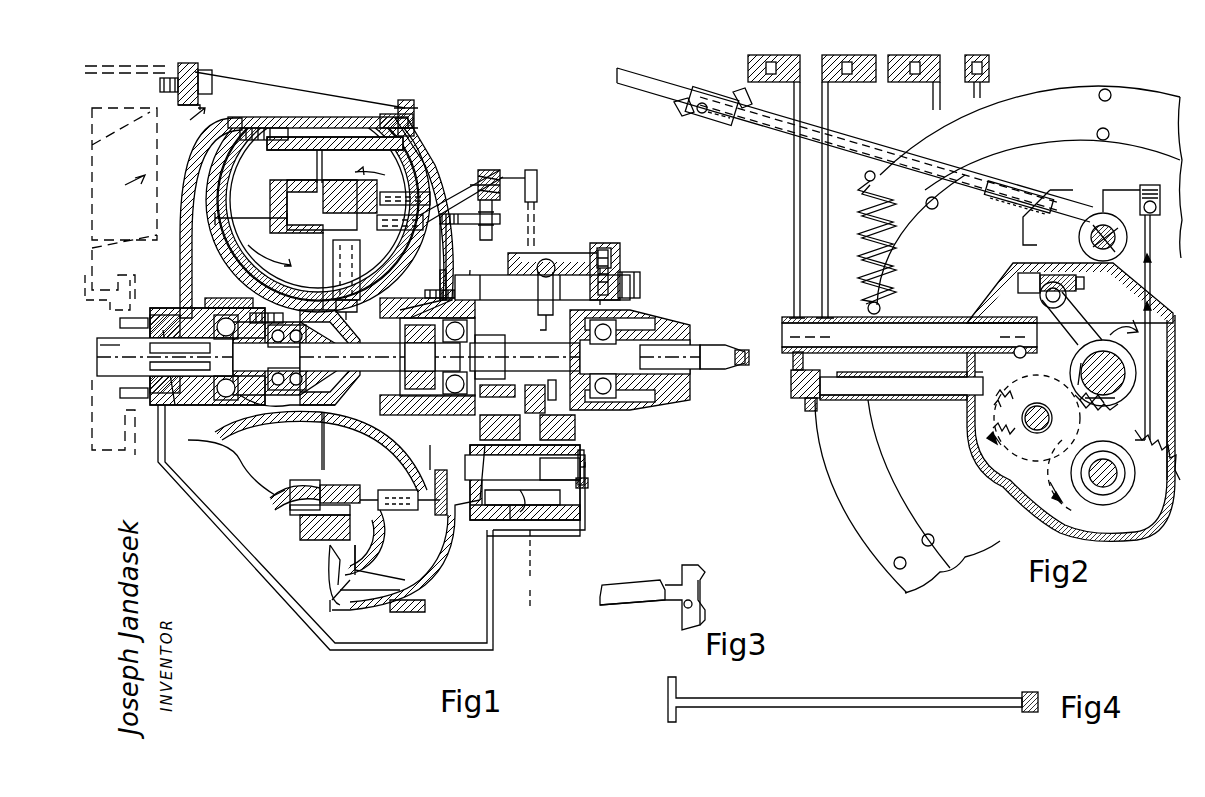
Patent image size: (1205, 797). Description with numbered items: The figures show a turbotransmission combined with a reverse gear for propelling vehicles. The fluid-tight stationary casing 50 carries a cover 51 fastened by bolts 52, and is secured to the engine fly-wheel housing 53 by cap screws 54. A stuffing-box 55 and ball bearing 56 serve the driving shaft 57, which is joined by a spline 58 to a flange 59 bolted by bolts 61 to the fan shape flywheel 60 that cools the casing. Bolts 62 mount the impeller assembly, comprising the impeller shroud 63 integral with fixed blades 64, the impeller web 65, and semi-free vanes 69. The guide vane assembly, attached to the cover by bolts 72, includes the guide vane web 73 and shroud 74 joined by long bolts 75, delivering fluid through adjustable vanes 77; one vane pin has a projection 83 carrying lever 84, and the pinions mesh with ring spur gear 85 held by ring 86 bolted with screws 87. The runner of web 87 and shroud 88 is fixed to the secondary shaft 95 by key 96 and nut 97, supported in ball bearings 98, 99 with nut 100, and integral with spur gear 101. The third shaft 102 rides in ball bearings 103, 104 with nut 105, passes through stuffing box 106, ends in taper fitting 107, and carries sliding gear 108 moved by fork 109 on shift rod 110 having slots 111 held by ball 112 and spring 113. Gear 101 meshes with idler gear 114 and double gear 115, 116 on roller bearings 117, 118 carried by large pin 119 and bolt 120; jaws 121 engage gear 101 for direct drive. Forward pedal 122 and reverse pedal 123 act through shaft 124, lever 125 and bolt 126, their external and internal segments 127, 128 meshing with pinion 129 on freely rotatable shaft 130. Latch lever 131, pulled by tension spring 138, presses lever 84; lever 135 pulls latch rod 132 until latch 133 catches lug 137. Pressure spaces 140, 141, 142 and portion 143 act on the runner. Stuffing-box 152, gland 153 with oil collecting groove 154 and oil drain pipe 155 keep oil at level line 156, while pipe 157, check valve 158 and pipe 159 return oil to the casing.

In FIG. 1, the stationary casing 50 is at (262, 125).
In FIG. 1, the cover 51 is at (440, 168).
In FIG. 1, the bolts 52 is at (410, 110).
In FIG. 1, the fly-wheel housing 53 is at (105, 68).
In FIG. 1, the cap screws 54 is at (200, 82).
In FIG. 1, the stuffing-box 55 is at (165, 315).
In FIG. 1, the ball bearing 56 is at (228, 308).
In FIG. 1, the driving shaft 57 is at (225, 358).
In FIG. 1, the spline 58 is at (100, 352).
In FIG. 1, the flange 59 is at (120, 425).
In FIG. 1, the fan shape flywheel 60 is at (100, 200).
In FIG. 1, the bolts 61 is at (92, 282).
In FIG. 1, the bolts 62 is at (265, 318).
In FIG. 1, the impeller shroud 63 is at (322, 545).
In FIG. 1, the fixed blades 64 is at (400, 165).
In FIG. 1, the impeller web 65 is at (375, 148).
In FIG. 1, the semi-free vanes 69 is at (400, 540).
In FIG. 1, the bolts 72 is at (470, 318).
In FIG. 1, the guide vane web 73 is at (385, 433).
In FIG. 1, the shroud 74 is at (365, 488).
In FIG. 1, the long bolts 75 is at (358, 270).
In FIG. 1, the adjustable vanes 77 is at (383, 490).
In FIG. 1, the projection 83 is at (492, 225).
In FIG. 2, the projection 83 is at (1095, 228).
In FIG. 1, the lever 84 is at (505, 220).
In FIG. 1, the ring spur gear 85 is at (447, 480).
In FIG. 1, the ring 86 is at (452, 255).
In FIG. 1, the runner web 87 is at (240, 455).
In FIG. 1, the shroud 88 is at (270, 500).
In FIG. 1, the secondary shaft 95 is at (385, 357).
In FIG. 1, the key 96 is at (350, 335).
In FIG. 1, the nut 97 is at (287, 357).
In FIG. 1, the ball bearing 98 is at (282, 412).
In FIG. 1, the ball bearing 99 is at (420, 405).
In FIG. 1, the nut 100 is at (418, 320).
In FIG. 1, the spur gear 101 is at (510, 398).
In FIG. 2, the spur gear 101 is at (1140, 422).
In FIG. 1, the third shaft 102 is at (556, 388).
In FIG. 2, the third shaft 102 is at (1095, 380).
In FIG. 1, the ball bearing 103 is at (530, 357).
In FIG. 1, the ball bearing 104 is at (632, 320).
In FIG. 1, the nut 105 is at (670, 357).
In FIG. 1, the stuffing box 106 is at (655, 330).
In FIG. 1, the taper fitting 107 is at (712, 355).
In FIG. 1, the sliding gear 108 is at (532, 441).
In FIG. 1, the fork 109 is at (548, 300).
In FIG. 2, the fork 109 is at (1072, 322).
In FIG. 1, the shift rod 110 is at (525, 278).
In FIG. 1, the slots 111 is at (642, 280).
In FIG. 1, the ball 112 is at (620, 265).
In FIG. 1, the spring 113 is at (615, 248).
In FIG. 2, the idler gear 114 is at (1003, 433).
In FIG. 1, the double gear 115 is at (518, 583).
In FIG. 2, the double gear 115 is at (1105, 515).
In FIG. 1, the double gear 116 is at (570, 508).
In FIG. 1, the roller bearing 117 is at (494, 478).
In FIG. 1, the roller bearing 118 is at (560, 469).
In FIG. 1, the large pin 119 is at (585, 462).
In FIG. 1, the bolt 120 is at (590, 485).
In FIG. 1, the jaws 121 is at (525, 390).
In FIG. 2, the forward pedal 122 is at (795, 185).
In FIG. 2, the reverse pedal 123 is at (822, 225).
In FIG. 2, the shaft 124 is at (885, 328).
In FIG. 2, the lever 125 is at (1030, 300).
In FIG. 2, the bolt 126 is at (1084, 286).
In FIG. 2, the external spur gear segment 127 is at (800, 370).
In FIG. 2, the internal spur gear segment 128 is at (808, 412).
In FIG. 2, the spur gear pinion 129 is at (790, 398).
In FIG. 2, the freely rotatable shaft 130 is at (870, 410).
In FIG. 1, the latch lever 131 is at (497, 170).
In FIG. 2, the latch lever 131 is at (860, 148).
In FIG. 4, the latch rod 132 is at (815, 702).
In FIG. 4, the latch 133 is at (1035, 692).
In FIG. 2, the lever 135 is at (622, 85).
In FIG. 3, the lever 135 is at (614, 590).
In FIG. 2, the lug 137 is at (1005, 242).
In FIG. 2, the tension spring 138 is at (920, 240).
In FIG. 1, the pressure space 140 is at (195, 296).
In FIG. 1, the pressure space 141 is at (258, 150).
In FIG. 1, the pressure space 142 is at (258, 218).
In FIG. 1, the portion 143 is at (315, 520).
In FIG. 1, the stuffing-box 152 is at (420, 357).
In FIG. 1, the stuffing-box gland 153 is at (180, 369).
In FIG. 1, the oil collecting groove 154 is at (176, 351).
In FIG. 1, the oil drain pipe 155 is at (238, 540).
In FIG. 2, the oil drain pipe 155 is at (1095, 428).
In FIG. 2, the oil level line 156 is at (975, 420).
In FIG. 2, the pipe 157 is at (1150, 280).
In FIG. 2, the check valve 158 is at (1138, 191).
In FIG. 1, the pipe 159 is at (532, 130).